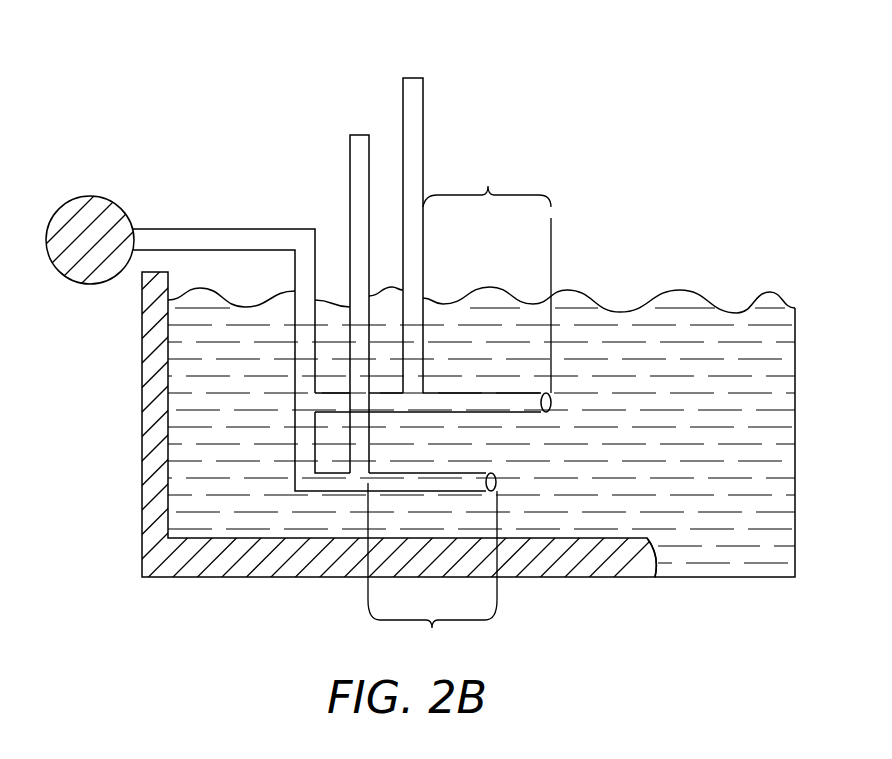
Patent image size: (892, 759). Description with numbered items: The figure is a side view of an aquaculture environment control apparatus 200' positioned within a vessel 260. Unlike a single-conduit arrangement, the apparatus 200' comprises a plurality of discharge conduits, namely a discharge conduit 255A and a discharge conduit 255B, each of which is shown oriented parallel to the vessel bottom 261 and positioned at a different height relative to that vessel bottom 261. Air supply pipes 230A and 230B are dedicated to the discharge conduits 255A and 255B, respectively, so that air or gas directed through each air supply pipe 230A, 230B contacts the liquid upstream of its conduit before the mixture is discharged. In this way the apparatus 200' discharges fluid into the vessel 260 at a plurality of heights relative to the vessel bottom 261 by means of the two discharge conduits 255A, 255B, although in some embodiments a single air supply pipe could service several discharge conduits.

The aquaculture environment control apparatus 200' is at (732, 62).
The air supply pipe 230A is at (423, 117).
The air supply pipe 230B is at (350, 195).
The discharge conduit 255A is at (487, 276).
The discharge conduit 255B is at (432, 570).
The vessel 260 is at (141, 403).
The vessel bottom 261 is at (561, 538).